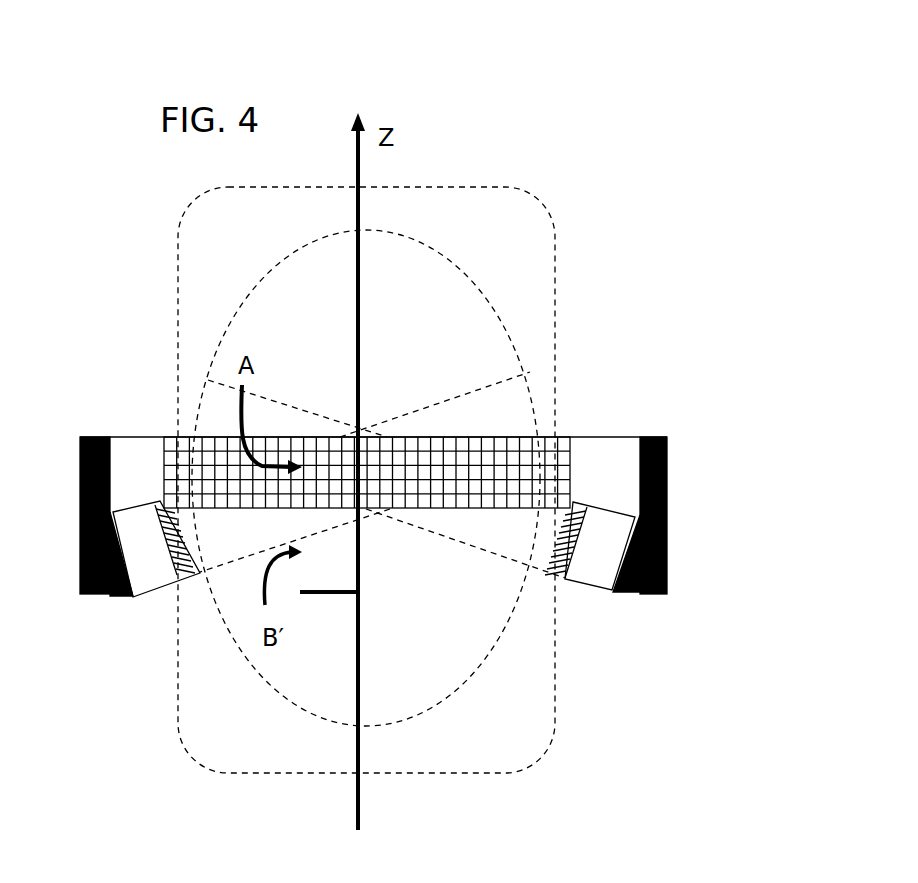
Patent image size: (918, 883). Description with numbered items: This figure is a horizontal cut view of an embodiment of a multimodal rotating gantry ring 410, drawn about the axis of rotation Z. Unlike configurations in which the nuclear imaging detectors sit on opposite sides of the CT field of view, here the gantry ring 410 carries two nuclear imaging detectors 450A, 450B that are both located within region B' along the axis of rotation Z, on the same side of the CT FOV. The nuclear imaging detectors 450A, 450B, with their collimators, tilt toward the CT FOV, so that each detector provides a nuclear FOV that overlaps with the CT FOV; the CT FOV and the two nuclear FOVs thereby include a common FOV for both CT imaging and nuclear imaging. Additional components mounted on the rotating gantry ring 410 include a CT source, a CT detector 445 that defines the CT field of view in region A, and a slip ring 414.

The rotating gantry ring 410 is at (491, 48).
The slip ring 414 is at (660, 494).
The CT detector 445 is at (563, 437).
The nuclear imaging detector 450A is at (148, 563).
The nuclear imaging detector 450B is at (597, 575).